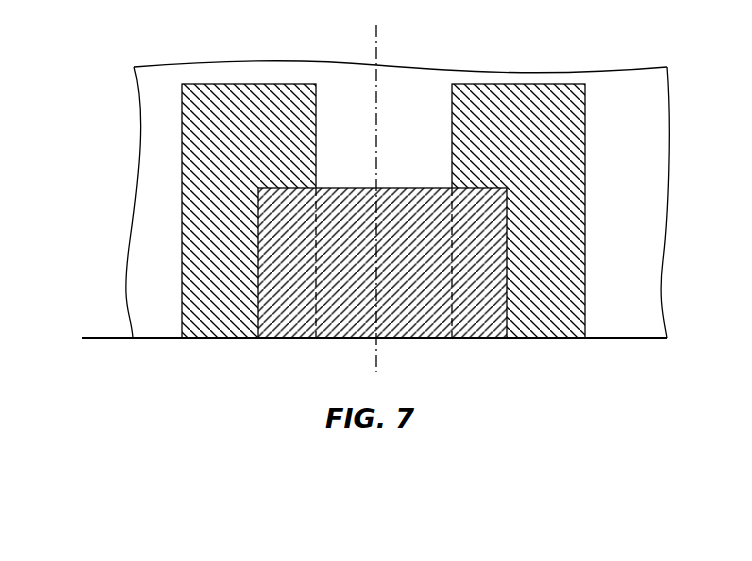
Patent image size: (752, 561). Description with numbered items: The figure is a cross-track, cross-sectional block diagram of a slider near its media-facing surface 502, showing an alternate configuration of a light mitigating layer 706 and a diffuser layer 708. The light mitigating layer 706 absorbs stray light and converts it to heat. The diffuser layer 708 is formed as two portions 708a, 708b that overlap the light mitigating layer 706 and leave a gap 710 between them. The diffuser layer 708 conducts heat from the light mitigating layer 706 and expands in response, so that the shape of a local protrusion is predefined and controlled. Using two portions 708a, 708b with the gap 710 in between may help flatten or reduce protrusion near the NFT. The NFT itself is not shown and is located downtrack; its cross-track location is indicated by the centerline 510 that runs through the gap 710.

The diffuser layer 708 is at (597, 67).
The first portion of diffuser layer 708a is at (207, 325).
The second portion of diffuser layer 708b is at (551, 330).
The light mitigating layer 706 is at (435, 338).
The media-facing surface 502 is at (162, 340).
The centerline 510 is at (373, 38).
The gap 710 is at (415, 140).